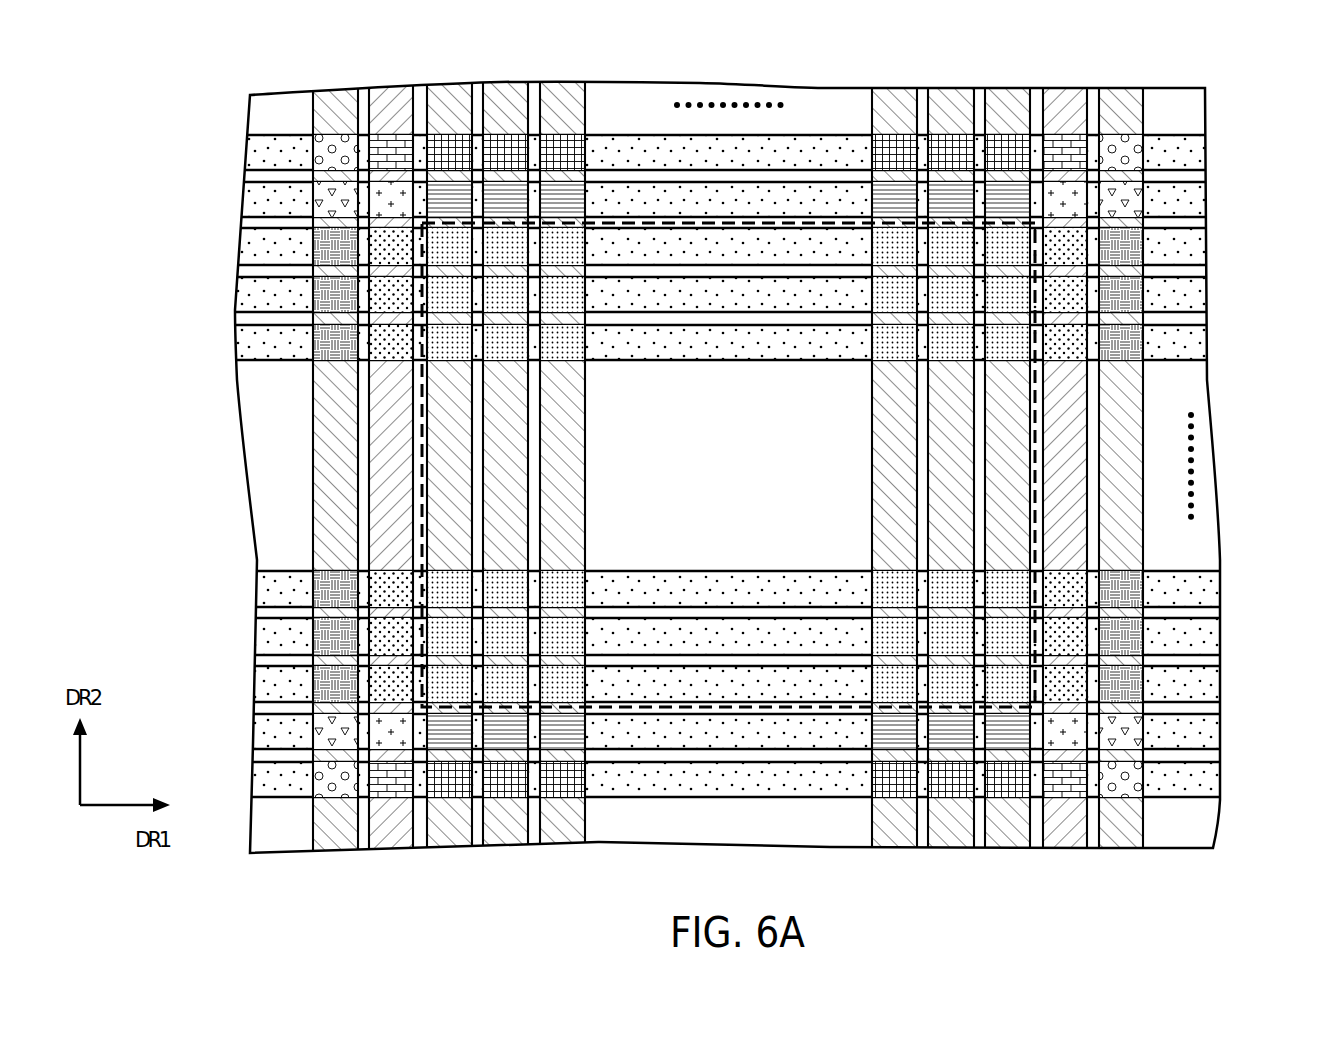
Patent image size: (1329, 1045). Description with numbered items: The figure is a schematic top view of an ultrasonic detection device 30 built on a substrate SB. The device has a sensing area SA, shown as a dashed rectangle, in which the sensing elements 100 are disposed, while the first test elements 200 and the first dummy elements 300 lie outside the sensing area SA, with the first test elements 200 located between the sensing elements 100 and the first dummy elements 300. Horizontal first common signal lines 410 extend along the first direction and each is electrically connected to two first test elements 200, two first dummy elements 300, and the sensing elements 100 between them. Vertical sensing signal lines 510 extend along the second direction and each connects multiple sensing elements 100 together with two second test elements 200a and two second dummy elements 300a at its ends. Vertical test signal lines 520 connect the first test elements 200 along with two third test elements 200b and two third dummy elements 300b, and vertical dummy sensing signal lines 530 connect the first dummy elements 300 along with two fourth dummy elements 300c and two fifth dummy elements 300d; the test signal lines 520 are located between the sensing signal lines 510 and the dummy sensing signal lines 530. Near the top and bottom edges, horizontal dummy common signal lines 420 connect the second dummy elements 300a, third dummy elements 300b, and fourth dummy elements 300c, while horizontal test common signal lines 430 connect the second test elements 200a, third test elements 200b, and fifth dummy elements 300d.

The ultrasonic detection device 30 is at (712, 470).
The sensing element 100 is at (585, 245).
The first test element 200 is at (392, 245).
The second test element 200a is at (560, 200).
The third test element 200b is at (393, 197).
The first dummy element 300 is at (330, 292).
The second dummy element 300a is at (560, 147).
The third dummy element 300b is at (395, 147).
The fourth dummy element 300c is at (339, 148).
The fifth dummy element 300d is at (335, 203).
The first common signal line 410 is at (1207, 693).
The dummy common signal line 420 is at (1207, 780).
The test common signal line 430 is at (1207, 732).
The sensing signal line 510 is at (728, 470).
The test signal line 520 is at (728, 470).
The dummy sensing signal line 530 is at (728, 470).
The sensing area SA is at (783, 223).
The substrate SB is at (846, 88).